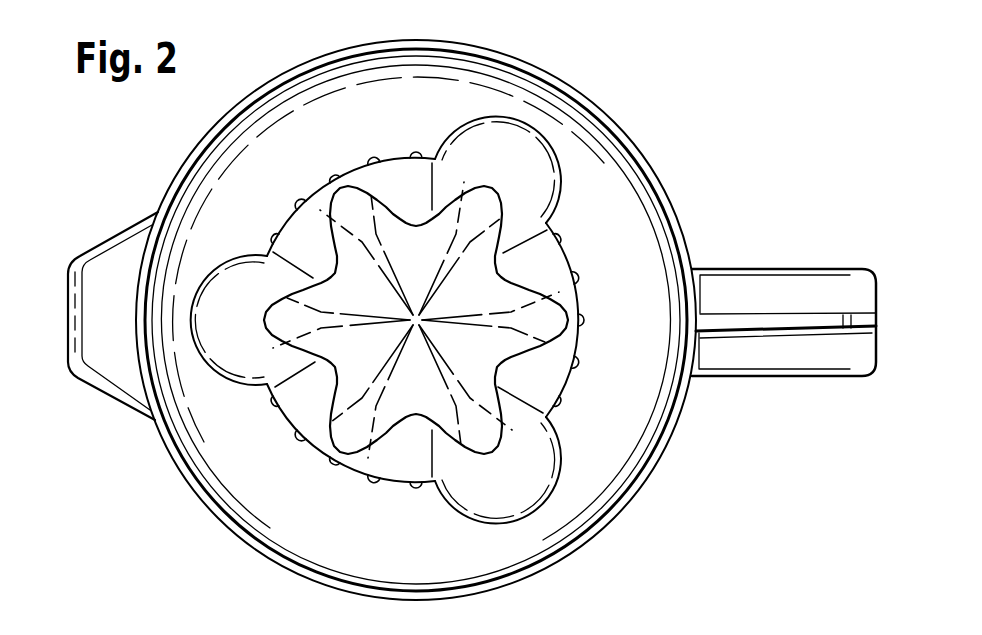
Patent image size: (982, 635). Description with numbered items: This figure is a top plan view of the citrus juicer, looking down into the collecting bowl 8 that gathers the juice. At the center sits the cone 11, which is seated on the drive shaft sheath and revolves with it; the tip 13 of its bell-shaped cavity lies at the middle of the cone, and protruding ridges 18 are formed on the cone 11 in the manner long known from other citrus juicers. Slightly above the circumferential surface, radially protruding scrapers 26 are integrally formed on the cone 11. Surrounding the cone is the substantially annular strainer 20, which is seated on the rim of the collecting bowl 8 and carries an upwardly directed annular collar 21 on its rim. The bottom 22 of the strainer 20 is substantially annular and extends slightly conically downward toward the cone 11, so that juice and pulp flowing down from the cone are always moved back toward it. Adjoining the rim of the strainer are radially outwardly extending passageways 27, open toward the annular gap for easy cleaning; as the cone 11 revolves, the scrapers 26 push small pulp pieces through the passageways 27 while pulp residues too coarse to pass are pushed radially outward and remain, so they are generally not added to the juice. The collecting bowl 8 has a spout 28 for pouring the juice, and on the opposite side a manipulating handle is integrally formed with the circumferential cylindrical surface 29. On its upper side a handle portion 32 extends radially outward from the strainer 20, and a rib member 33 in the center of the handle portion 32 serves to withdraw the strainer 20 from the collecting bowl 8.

The collecting bowl 8 is at (650, 164).
The cone 11 is at (536, 291).
The tip of the cavity 13 is at (400, 422).
The ridges of reamer 18 is at (340, 203).
The strainer 20 is at (212, 495).
The annular collar 21 is at (262, 553).
The bottom of the strainer 22 is at (577, 507).
The scrapers 26 is at (533, 158).
The passageways 27 is at (270, 238).
The spout 28 is at (92, 307).
The circumferential cylindrical surface 29 is at (680, 423).
The handle portion 32 is at (808, 362).
The rib member 33 is at (788, 325).